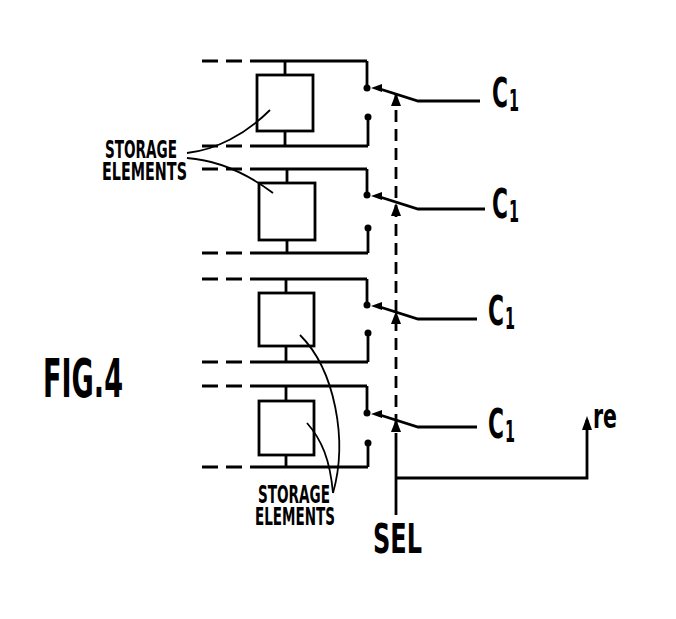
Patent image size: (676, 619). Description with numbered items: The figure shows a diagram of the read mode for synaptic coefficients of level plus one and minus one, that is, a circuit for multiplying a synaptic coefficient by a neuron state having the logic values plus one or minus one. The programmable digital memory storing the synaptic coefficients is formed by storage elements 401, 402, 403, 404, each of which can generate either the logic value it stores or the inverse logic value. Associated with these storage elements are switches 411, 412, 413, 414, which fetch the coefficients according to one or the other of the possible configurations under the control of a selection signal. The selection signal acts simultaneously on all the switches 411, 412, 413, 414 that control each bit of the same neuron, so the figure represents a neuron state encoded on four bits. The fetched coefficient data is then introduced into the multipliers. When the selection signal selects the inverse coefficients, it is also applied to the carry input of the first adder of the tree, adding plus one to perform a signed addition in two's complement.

The storage element 401 is at (259, 424).
The storage element 402 is at (259, 308).
The storage element 403 is at (259, 210).
The storage element 404 is at (257, 108).
The switch 411 is at (408, 417).
The switch 412 is at (408, 308).
The switch 413 is at (409, 199).
The switch 414 is at (408, 92).